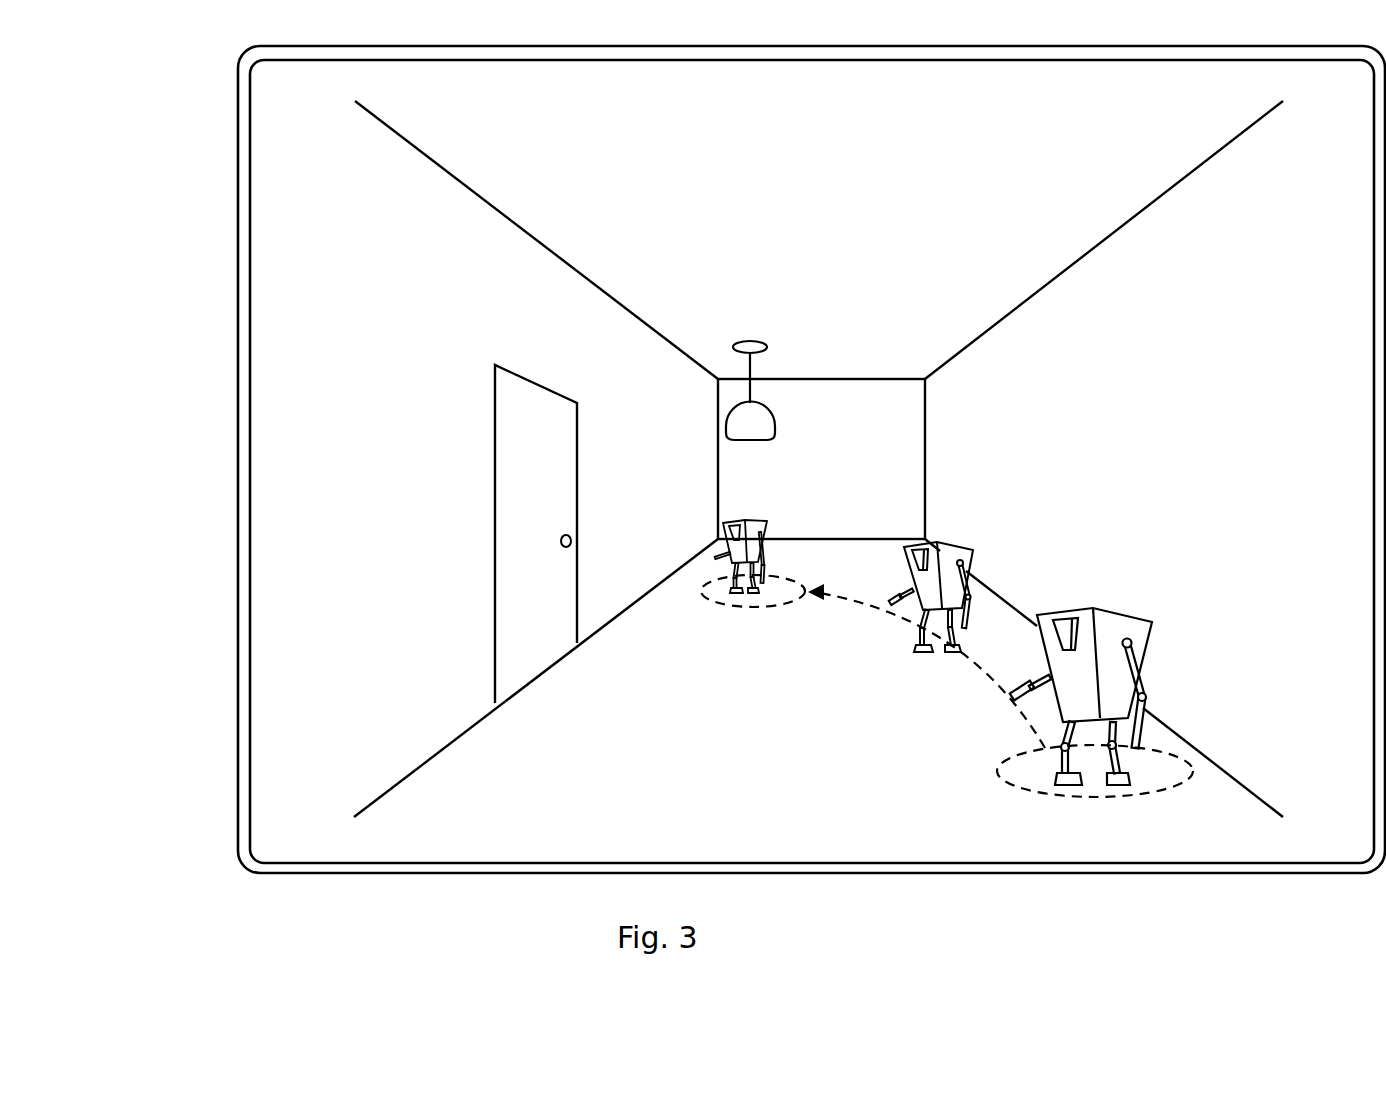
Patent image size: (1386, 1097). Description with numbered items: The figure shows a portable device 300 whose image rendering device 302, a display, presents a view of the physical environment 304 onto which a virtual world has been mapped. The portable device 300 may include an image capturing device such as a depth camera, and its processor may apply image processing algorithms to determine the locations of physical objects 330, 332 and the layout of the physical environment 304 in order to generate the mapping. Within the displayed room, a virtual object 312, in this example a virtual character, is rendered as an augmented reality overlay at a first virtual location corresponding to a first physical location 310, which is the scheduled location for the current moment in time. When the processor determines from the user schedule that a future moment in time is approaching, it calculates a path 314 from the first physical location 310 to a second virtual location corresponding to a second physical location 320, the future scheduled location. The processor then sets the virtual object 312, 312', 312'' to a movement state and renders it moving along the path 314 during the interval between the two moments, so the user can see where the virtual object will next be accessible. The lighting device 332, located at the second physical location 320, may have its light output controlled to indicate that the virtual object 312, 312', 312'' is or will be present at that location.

The portable device 300 is at (238, 834).
The image rendering device 302 is at (257, 732).
The physical environment 304 is at (739, 819).
The first physical location 310 is at (995, 768).
The virtual object 312 is at (1158, 691).
The virtual object 312' is at (1007, 586).
The virtual object 312'' is at (812, 539).
The path 314 is at (985, 684).
The second physical location 320 is at (722, 613).
The object 330 is at (515, 457).
The lighting device 332 is at (750, 420).